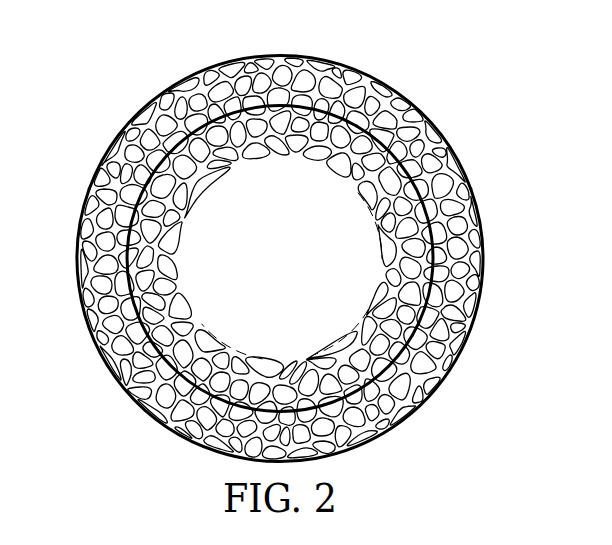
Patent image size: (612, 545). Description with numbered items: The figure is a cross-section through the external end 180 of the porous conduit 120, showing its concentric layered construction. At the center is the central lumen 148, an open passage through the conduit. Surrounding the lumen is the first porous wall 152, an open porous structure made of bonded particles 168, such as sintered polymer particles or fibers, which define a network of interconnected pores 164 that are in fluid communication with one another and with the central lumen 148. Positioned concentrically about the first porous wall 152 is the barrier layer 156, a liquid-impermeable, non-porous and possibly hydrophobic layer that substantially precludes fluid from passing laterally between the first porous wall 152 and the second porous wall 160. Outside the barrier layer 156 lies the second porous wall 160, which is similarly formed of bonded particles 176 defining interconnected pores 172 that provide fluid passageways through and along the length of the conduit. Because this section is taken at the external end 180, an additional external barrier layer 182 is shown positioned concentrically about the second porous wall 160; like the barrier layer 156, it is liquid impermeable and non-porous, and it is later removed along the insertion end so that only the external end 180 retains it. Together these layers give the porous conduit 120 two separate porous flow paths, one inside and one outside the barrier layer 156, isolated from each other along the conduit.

The porous conduit 120 is at (193, 246).
The external end 180 is at (108, 86).
The central lumen 148 is at (301, 217).
The first porous wall 152 is at (373, 227).
The barrier layer 156 is at (456, 272).
The second porous wall 160 is at (443, 362).
The interconnected pores 164 is at (350, 340).
The bonded particles 168 is at (223, 348).
The interconnected pores 172 is at (259, 60).
The bonded particles 176 is at (351, 83).
The external barrier layer 182 is at (398, 403).